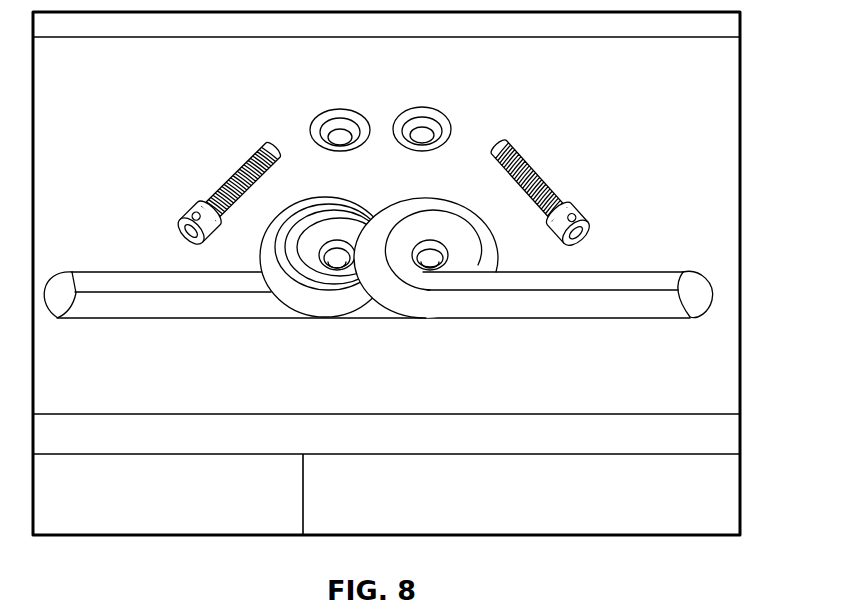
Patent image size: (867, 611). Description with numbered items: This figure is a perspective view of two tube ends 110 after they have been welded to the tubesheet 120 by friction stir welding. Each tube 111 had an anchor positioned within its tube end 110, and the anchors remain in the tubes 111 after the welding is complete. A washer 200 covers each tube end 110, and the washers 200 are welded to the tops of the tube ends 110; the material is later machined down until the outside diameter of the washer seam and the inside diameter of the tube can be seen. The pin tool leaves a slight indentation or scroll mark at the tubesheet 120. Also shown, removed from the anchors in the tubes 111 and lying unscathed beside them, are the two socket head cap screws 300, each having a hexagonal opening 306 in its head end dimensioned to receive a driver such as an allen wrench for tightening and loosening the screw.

The tube end 110 is at (352, 128).
The tube 111 is at (425, 262).
The tubesheet 120 is at (727, 326).
The washer 200 is at (320, 117).
The socket head cap screw 300 is at (340, 132).
The hexagonal opening 306 is at (176, 228).